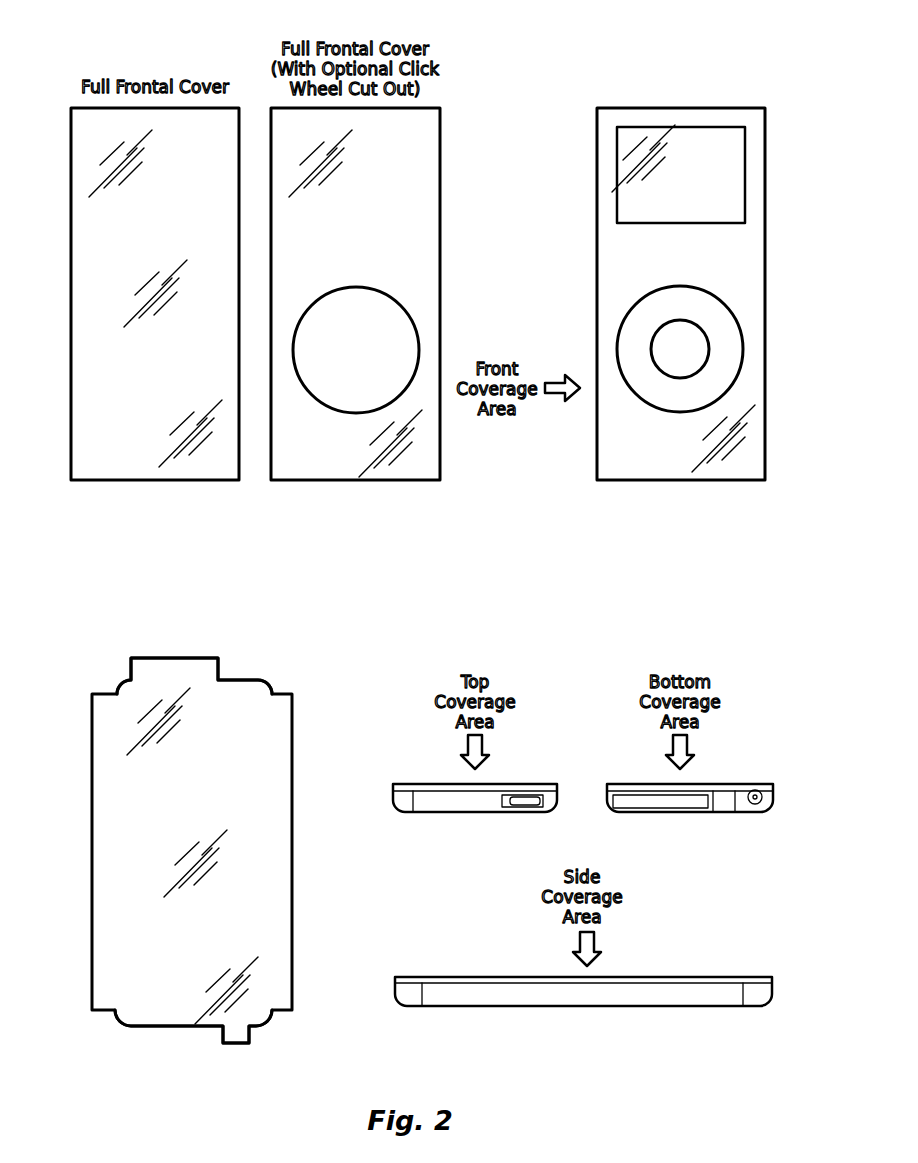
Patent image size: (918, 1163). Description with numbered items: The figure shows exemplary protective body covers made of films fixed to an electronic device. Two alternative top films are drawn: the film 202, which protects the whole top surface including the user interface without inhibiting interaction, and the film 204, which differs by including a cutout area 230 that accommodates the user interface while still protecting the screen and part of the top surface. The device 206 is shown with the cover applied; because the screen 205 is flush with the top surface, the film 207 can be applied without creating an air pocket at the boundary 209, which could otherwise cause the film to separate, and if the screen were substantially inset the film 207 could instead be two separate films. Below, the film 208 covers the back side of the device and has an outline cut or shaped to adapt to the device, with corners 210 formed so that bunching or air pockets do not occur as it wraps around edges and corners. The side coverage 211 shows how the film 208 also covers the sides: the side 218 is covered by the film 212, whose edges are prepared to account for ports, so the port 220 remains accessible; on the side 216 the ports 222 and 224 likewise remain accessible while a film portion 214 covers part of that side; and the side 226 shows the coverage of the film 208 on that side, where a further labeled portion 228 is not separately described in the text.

The film 202 is at (157, 481).
The film 204 is at (355, 481).
The cutout area 230 is at (405, 335).
The device 206 is at (681, 315).
The film 207 is at (620, 272).
The screen 205 is at (730, 177).
The boundary 209 is at (617, 168).
The film 208 is at (283, 742).
The corners 210 is at (98, 656).
The film 212 is at (475, 792).
The side 218 is at (485, 784).
The port 220 is at (520, 805).
The film portion 214 is at (702, 791).
The port 224 is at (640, 795).
The port 222 is at (755, 790).
The side 216 is at (775, 790).
The side coverage 211 is at (632, 830).
The side 226 is at (611, 969).
The side surface 228 is at (690, 995).